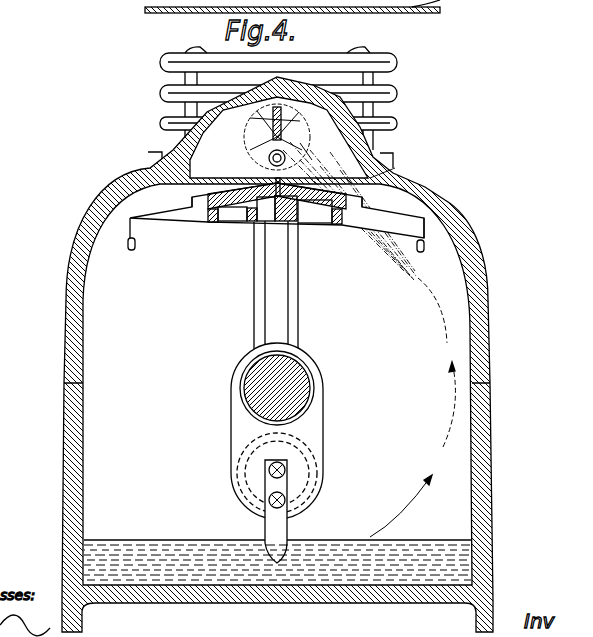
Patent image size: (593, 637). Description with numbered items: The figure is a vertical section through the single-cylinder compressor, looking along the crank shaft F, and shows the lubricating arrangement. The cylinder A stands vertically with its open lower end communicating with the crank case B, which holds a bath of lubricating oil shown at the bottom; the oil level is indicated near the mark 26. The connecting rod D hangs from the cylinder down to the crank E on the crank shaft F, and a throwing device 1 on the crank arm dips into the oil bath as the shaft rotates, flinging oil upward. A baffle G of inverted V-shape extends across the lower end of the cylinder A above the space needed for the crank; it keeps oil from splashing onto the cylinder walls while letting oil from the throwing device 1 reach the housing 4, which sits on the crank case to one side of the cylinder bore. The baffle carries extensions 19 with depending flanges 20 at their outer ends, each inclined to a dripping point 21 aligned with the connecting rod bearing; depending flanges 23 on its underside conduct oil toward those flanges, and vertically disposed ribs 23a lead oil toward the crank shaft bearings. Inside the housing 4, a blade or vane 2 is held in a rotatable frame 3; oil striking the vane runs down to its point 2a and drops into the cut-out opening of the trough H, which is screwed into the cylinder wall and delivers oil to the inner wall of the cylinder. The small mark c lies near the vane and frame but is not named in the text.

The cylinder A is at (360, 76).
The housing 4 is at (373, 147).
The crank case B is at (277, 354).
The blade or vane 2 is at (298, 121).
The point of the vane 2a is at (258, 138).
The oil-catching device or trough H is at (267, 160).
The link c is at (311, 151).
The frame 3 is at (349, 211).
The baffle G is at (383, 212).
The extensions 19 is at (177, 225).
The depending flange 20 is at (128, 226).
The vertically disposed ribs 23a is at (222, 223).
The depending flanges 23 is at (248, 240).
The dripping point 21 is at (130, 250).
The connecting rod D is at (282, 302).
The crank E is at (312, 456).
The crank shaft F is at (267, 387).
The throwing devices 1 is at (277, 528).
The oil 26 is at (133, 543).